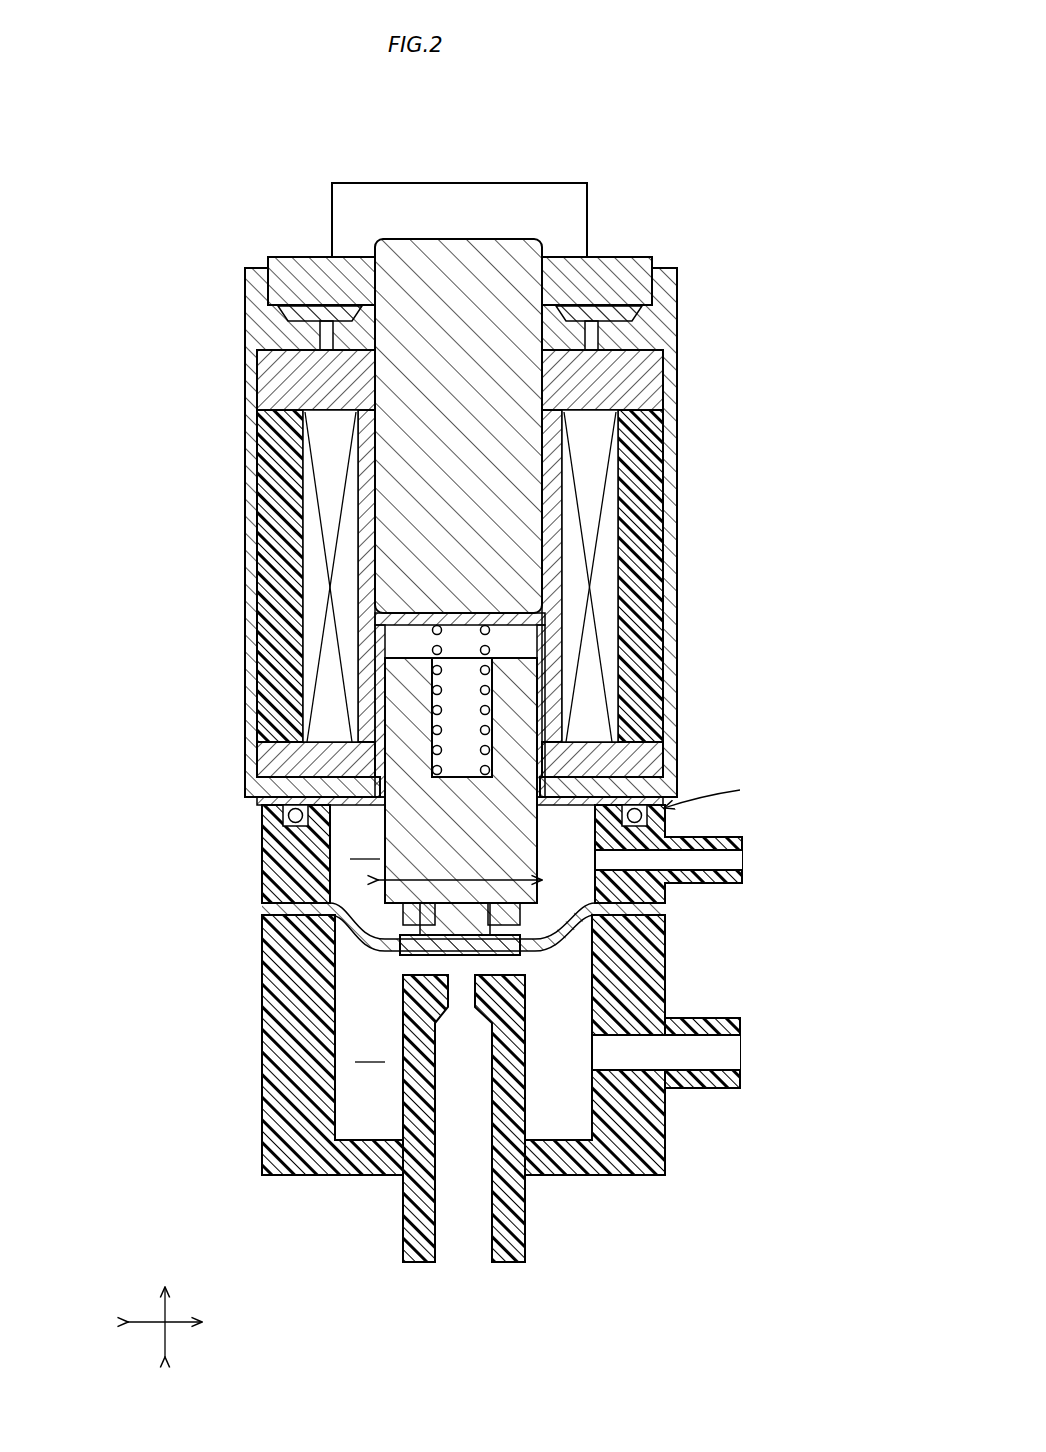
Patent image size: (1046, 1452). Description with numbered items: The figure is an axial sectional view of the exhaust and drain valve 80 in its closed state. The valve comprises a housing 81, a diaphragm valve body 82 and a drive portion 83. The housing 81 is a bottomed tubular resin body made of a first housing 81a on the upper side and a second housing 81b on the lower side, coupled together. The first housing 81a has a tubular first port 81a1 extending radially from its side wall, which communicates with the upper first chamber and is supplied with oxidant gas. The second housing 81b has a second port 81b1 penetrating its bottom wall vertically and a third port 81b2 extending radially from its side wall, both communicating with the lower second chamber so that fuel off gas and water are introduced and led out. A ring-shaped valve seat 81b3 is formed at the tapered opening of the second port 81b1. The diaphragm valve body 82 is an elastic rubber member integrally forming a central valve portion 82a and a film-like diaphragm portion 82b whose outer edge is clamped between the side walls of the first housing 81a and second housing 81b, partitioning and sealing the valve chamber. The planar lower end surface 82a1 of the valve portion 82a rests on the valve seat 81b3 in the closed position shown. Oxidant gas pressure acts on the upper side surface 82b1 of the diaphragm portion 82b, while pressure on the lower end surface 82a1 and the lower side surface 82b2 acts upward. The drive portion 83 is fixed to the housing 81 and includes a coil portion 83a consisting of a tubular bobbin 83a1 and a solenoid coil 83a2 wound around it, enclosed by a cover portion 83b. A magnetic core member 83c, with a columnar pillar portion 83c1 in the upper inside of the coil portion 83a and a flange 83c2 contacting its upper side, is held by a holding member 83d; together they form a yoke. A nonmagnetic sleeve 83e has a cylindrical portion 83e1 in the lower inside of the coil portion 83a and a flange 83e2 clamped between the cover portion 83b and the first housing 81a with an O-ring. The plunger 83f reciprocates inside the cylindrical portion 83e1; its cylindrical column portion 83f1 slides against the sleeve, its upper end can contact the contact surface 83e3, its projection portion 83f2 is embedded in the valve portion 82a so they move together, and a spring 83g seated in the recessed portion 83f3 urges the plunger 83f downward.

The exhaust and drain valve 80 is at (148, 108).
The housing 81 is at (258, 818).
The first housing 81a is at (262, 850).
The first port 81a1 is at (742, 880).
The second housing 81b is at (262, 1140).
The second port 81b1 is at (498, 1262).
The third port 81b2 is at (742, 1080).
The valve seat 81b3 is at (440, 980).
The diaphragm valve body 82 is at (98, 930).
The valve portion 82a is at (425, 955).
The lower end surface 82a1 is at (455, 1020).
The diaphragm portion 82b is at (345, 935).
The upper side surface 82b1 is at (345, 905).
The lower side surface 82b2 is at (412, 955).
The drive portion 83 is at (240, 357).
The coil portion 83a is at (262, 470).
The bobbin 83a1 is at (300, 455).
The solenoid coil 83a2 is at (300, 520).
The cover portion 83b is at (678, 340).
The core member 83c is at (595, 130).
The pillar portion 83c1 is at (446, 238).
The flange 83c2 is at (556, 257).
The holding member 83d is at (623, 256).
The sleeve 83e is at (132, 568).
The cylindrical portion 83e1 is at (425, 622).
The flange 83e2 is at (262, 800).
The contact surface 83e3 is at (379, 656).
The plunger 83f is at (546, 838).
The cylindrical column portion 83f1 is at (545, 866).
The projection portion 83f2 is at (482, 928).
The recessed portion 83f3 is at (460, 690).
The spring 83g is at (493, 650).